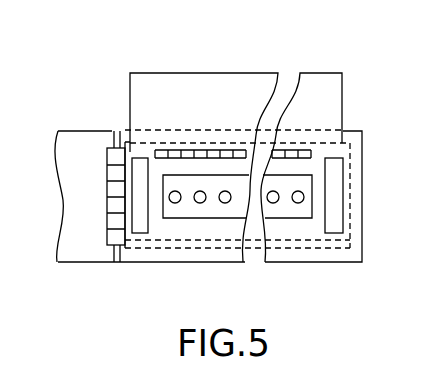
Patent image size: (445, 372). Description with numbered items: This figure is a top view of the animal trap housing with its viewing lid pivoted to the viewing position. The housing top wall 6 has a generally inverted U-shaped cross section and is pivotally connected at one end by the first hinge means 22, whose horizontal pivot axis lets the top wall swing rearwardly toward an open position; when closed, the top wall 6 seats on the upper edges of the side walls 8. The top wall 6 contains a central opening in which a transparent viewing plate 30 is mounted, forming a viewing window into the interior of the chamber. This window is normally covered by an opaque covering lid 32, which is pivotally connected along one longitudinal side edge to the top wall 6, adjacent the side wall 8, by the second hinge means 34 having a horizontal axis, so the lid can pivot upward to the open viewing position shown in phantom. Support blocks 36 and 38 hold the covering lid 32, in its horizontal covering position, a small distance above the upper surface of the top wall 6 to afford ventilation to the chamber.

The housing top wall 6 is at (86, 155).
The side wall 8 is at (168, 247).
The first hinge means 22 is at (107, 228).
The transparent viewing plate 30 is at (288, 208).
The opaque covering lid 32 is at (150, 100).
The second hinge means 34 is at (205, 152).
The support block 36 is at (142, 180).
The support block 38 is at (336, 175).